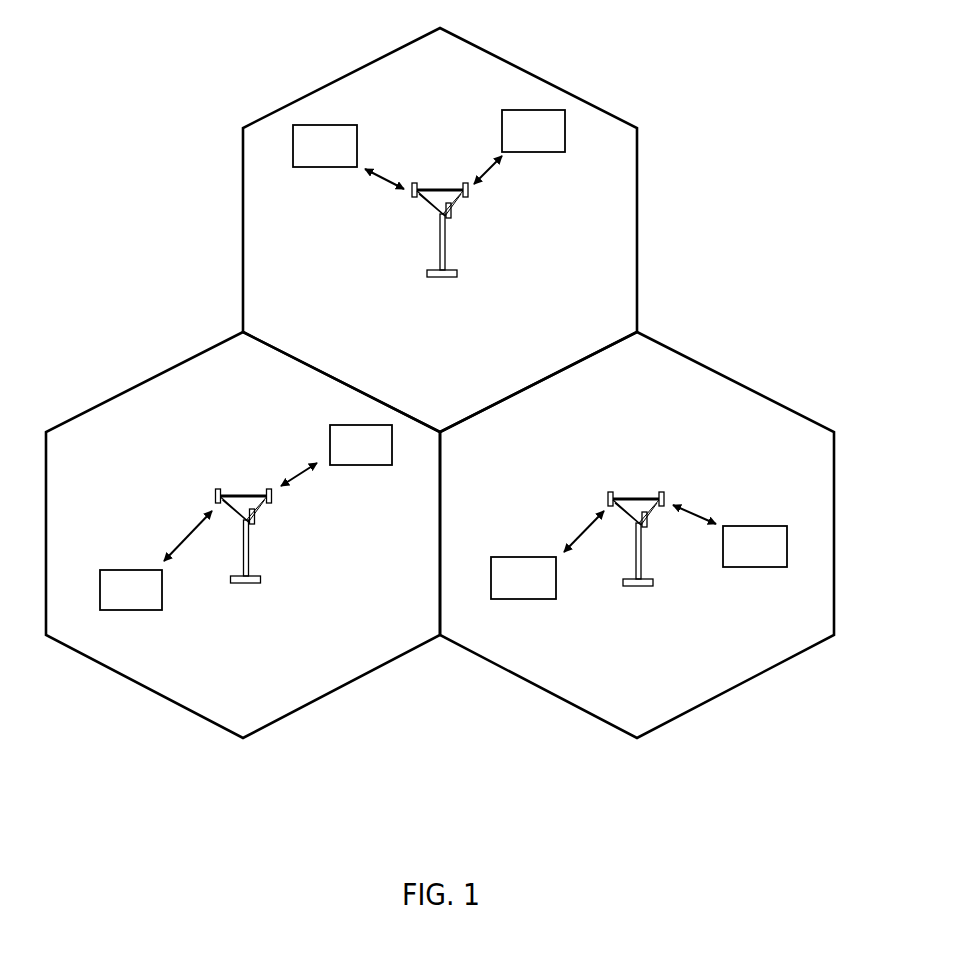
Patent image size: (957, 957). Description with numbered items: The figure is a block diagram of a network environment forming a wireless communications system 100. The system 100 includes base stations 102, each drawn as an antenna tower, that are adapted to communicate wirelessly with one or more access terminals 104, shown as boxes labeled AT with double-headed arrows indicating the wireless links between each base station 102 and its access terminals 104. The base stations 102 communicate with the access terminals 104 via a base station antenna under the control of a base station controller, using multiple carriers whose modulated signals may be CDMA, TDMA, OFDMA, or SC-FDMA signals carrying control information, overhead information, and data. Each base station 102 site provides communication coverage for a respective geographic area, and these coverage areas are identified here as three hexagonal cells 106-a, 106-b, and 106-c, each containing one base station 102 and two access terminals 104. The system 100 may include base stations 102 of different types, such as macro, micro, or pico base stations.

The wireless communications system 100 is at (748, 57).
The base station 102 is at (440, 189).
The access terminal 104 is at (315, 168).
The cell 106-a is at (123, 392).
The cell 106-b is at (522, 70).
The cell 106-c is at (733, 382).